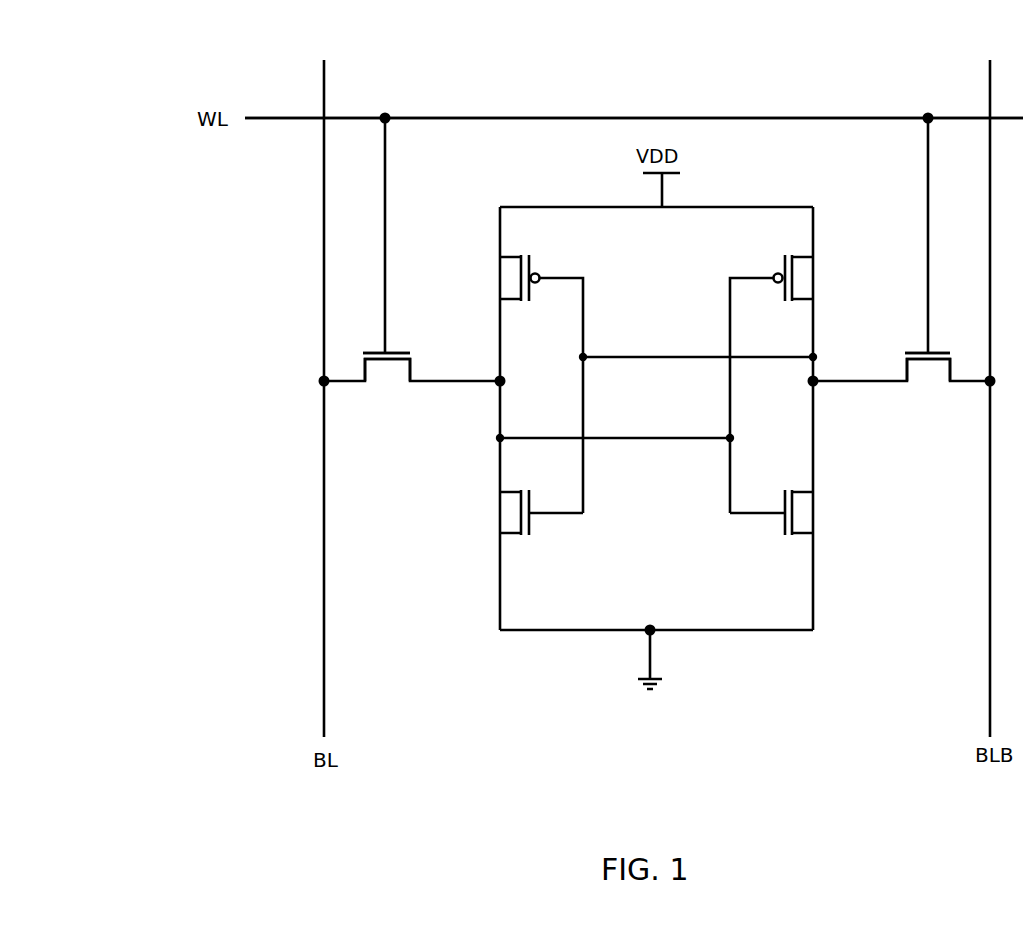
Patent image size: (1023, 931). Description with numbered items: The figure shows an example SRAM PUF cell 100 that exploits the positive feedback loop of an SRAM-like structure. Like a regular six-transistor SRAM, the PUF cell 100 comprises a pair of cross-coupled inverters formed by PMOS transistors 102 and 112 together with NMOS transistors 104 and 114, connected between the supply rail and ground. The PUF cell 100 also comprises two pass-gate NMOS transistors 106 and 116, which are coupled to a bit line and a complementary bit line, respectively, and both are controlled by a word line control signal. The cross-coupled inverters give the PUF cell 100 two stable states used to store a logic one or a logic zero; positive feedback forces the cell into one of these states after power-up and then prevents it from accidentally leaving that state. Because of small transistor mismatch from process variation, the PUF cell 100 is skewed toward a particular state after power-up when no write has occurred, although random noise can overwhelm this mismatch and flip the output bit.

The PUF cell 100 is at (204, 54).
The PMOS transistor 102 is at (478, 283).
The NMOS transistor 104 is at (494, 517).
The pass-gate NMOS transistor 106 is at (376, 388).
The PMOS transistor 112 is at (822, 283).
The NMOS transistor 114 is at (822, 517).
The pass-gate NMOS transistor 116 is at (929, 388).